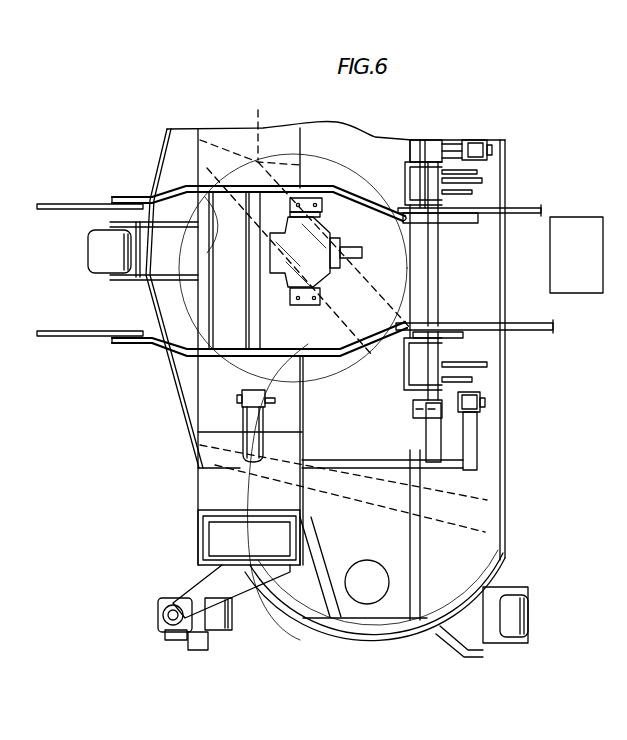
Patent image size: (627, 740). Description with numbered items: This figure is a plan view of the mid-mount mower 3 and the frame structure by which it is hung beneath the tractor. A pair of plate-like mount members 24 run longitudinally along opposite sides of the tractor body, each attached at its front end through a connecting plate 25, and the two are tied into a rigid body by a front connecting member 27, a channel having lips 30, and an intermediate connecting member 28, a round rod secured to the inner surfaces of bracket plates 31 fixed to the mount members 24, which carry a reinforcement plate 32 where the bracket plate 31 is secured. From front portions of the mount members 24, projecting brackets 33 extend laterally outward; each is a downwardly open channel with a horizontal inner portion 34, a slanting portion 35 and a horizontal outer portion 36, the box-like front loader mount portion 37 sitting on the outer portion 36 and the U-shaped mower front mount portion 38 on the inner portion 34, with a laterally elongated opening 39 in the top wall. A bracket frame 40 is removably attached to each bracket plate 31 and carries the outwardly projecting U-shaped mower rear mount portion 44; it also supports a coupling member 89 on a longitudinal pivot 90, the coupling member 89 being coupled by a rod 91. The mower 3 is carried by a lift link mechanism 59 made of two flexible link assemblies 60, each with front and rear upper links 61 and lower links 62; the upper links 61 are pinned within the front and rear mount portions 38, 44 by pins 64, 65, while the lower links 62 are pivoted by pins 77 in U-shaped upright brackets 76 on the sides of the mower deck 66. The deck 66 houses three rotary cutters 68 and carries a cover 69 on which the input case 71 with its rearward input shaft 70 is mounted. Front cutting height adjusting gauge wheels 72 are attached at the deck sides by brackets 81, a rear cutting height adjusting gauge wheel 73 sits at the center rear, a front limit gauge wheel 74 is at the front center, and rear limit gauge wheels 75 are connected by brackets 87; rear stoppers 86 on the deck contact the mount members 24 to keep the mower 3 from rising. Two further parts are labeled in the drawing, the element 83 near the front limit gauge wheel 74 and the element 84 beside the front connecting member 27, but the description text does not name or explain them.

The mid-mount mower 3 is at (172, 393).
The mount member 24 is at (333, 186).
The connecting plate 25 is at (60, 210).
The front connecting member 27 is at (238, 331).
The intermediate connecting member 28 is at (438, 291).
The lips 30 is at (228, 186).
The bracket plate 31 is at (440, 215).
The reinforcement plate 32 is at (405, 236).
The projecting bracket 33 is at (189, 148).
The horizontal inner portion 34 is at (292, 152).
The intermediate slanting portion 35 is at (207, 468).
The horizontal outer portion 36 is at (197, 541).
The front loader mount portion 37 is at (300, 540).
The mower front mount portion 38 is at (290, 483).
The opening 39 is at (262, 424).
The bracket frame 40 is at (405, 183).
The mower rear mount portion 44 is at (433, 150).
The lift link mechanism 59 is at (390, 470).
The flexible link assembly 60 is at (447, 472).
The upper link 61 is at (247, 421).
The lower link 62 is at (473, 140).
The pin 64 is at (242, 396).
The pin 65 is at (415, 140).
The mower deck 66 is at (362, 641).
The rotary cutter 68 is at (511, 535).
The cover 69 is at (404, 612).
The input shaft 70 is at (346, 264).
The input case 71 is at (290, 278).
The front cutting height adjusting gauge wheel 72 is at (222, 633).
The rear cutting height adjusting gauge wheel 73 is at (566, 217).
The front limit gauge wheel 74 is at (99, 277).
The rear limit gauge wheel 75 is at (529, 611).
The upright bracket 76 is at (488, 148).
The pin 77 is at (492, 153).
The bracket 81 is at (247, 601).
The bracket 83 is at (148, 252).
The hub column 84 is at (209, 253).
The rear stopper 86 is at (430, 246).
The bracket 87 is at (482, 648).
The coupling member 89 is at (478, 172).
The pivot 90 is at (392, 213).
The rod 91 is at (462, 187).